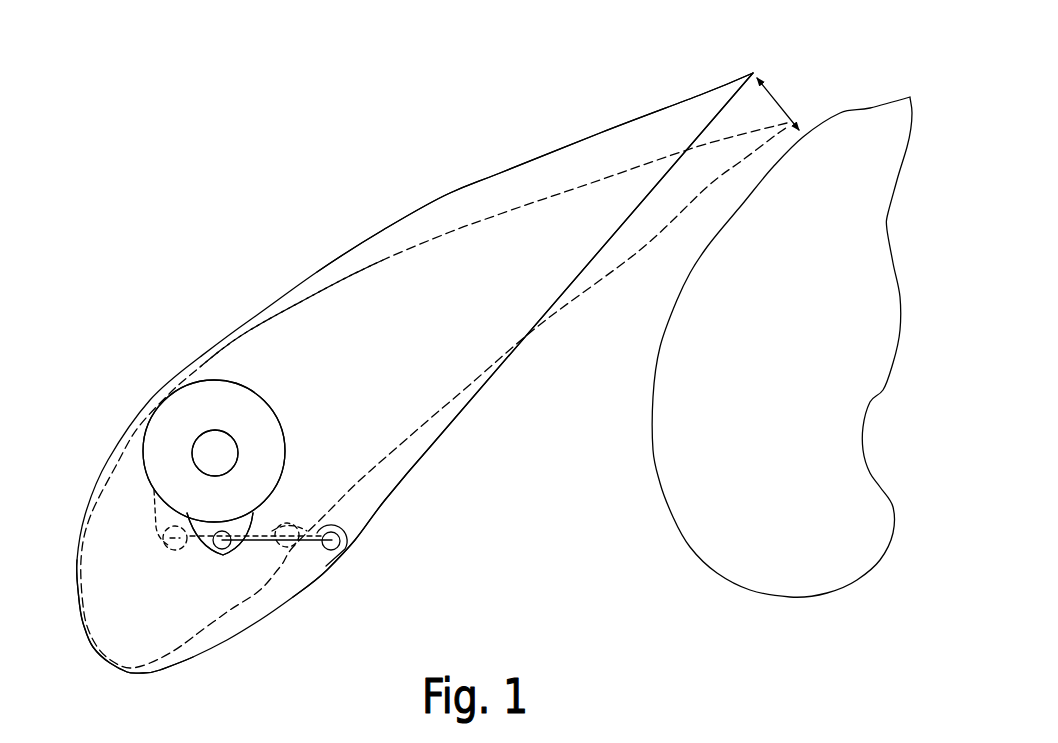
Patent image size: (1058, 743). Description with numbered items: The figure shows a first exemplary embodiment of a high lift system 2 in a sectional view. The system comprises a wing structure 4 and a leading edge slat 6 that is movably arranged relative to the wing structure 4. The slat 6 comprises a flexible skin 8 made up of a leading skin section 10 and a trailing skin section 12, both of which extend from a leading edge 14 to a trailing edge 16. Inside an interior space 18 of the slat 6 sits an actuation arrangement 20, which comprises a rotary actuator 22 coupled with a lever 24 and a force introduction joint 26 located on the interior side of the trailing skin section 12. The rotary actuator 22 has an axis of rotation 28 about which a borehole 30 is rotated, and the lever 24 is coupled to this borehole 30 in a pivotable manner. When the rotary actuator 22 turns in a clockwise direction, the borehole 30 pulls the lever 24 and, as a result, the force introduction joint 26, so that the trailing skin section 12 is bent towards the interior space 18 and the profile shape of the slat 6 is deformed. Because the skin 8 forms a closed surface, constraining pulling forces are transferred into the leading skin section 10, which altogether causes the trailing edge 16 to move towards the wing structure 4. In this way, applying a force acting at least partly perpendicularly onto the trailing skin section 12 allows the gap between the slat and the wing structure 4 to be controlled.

The high lift system 2 is at (468, 118).
The wing structure 4 is at (807, 590).
The leading edge slat 6 is at (292, 296).
The flexible skin 8 is at (388, 228).
The leading skin section 10 is at (228, 308).
The trailing skin section 12 is at (432, 480).
The leading edge 14 is at (84, 680).
The trailing edge 16 is at (765, 66).
The interior space 18 is at (364, 365).
The actuation arrangement 20 is at (284, 378).
The rotary actuator 22 is at (268, 423).
The lever 24 is at (297, 547).
The force introduction joint 26 is at (347, 543).
The axis of rotation 28 is at (213, 453).
The borehole 30 is at (212, 556).